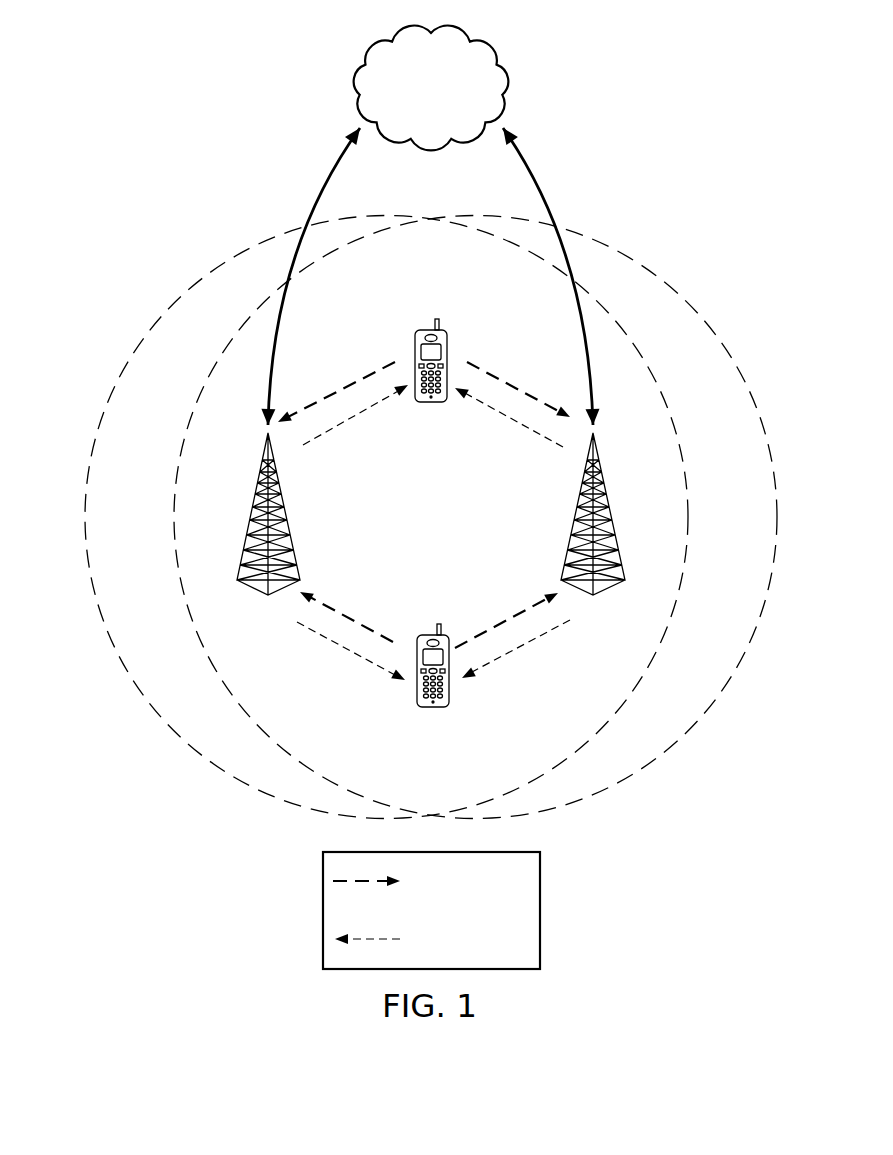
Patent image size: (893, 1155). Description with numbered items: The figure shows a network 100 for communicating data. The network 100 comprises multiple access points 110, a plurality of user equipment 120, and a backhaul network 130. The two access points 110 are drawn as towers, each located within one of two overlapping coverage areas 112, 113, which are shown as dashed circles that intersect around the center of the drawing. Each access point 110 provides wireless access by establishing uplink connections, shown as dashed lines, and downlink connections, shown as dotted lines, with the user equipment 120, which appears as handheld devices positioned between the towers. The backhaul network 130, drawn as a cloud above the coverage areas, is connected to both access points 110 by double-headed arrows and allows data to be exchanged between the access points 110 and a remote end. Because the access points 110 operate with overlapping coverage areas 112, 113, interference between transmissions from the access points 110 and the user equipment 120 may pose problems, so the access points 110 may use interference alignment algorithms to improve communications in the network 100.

The network 100 is at (198, 95).
The access point 110 is at (251, 513).
The coverage area 112 is at (750, 532).
The coverage area 113 is at (152, 533).
The user equipment 120 is at (415, 340).
The backhaul network 130 is at (510, 26).